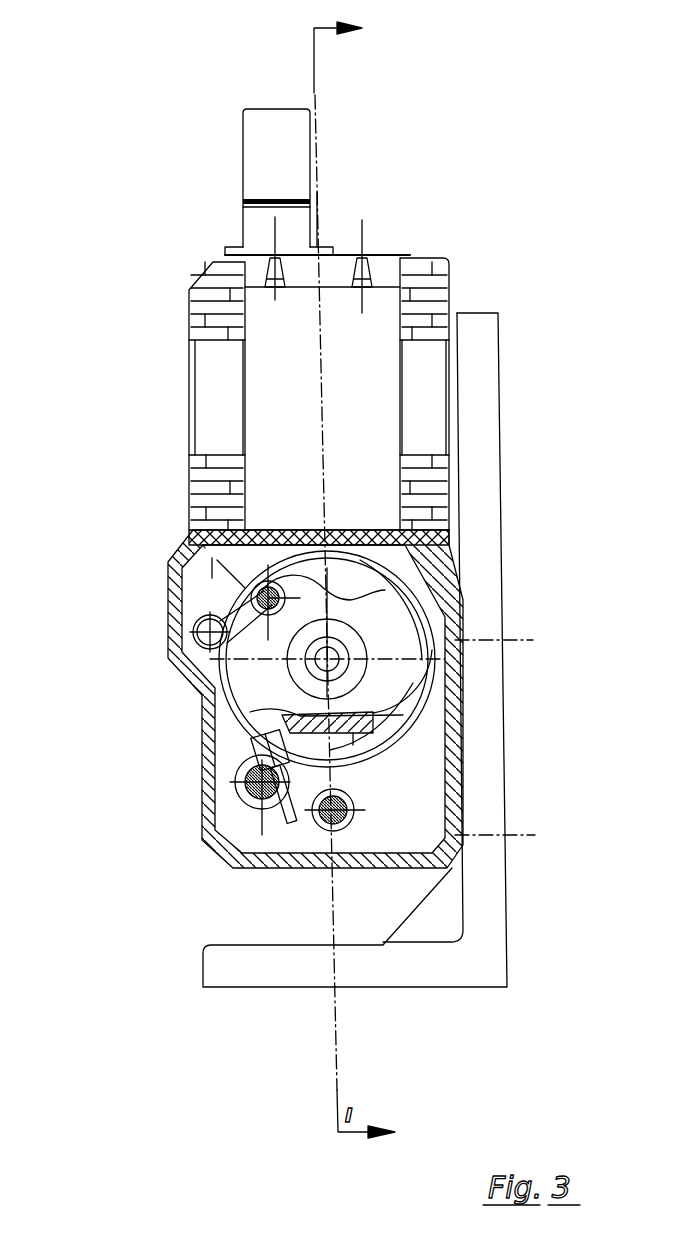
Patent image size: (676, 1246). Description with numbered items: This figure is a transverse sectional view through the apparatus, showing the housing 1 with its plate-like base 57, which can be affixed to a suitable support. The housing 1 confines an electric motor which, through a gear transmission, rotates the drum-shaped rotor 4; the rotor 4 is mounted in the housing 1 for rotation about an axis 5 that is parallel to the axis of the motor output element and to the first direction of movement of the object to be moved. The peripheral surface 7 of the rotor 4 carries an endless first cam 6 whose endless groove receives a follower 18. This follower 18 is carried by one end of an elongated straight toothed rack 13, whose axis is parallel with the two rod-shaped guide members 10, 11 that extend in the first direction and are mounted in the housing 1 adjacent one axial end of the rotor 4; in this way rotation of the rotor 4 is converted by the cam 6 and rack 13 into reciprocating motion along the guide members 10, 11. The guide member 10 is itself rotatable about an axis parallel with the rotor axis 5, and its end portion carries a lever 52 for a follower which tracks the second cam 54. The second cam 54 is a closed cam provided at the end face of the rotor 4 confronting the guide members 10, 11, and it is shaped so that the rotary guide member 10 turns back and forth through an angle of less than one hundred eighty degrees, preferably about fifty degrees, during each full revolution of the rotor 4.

The housing 1 is at (451, 726).
The drum-shaped rotor 4 is at (440, 591).
The axis 5 is at (332, 600).
The endless first cam 6 is at (415, 679).
The peripheral surface 7 is at (412, 545).
The guide member 10 is at (197, 529).
The guide member 11 is at (250, 808).
The toothed rack 13 is at (400, 833).
The follower 18 is at (345, 790).
The lever 52 is at (173, 555).
The second cam 54 is at (173, 642).
The plate-like base 57 is at (472, 383).